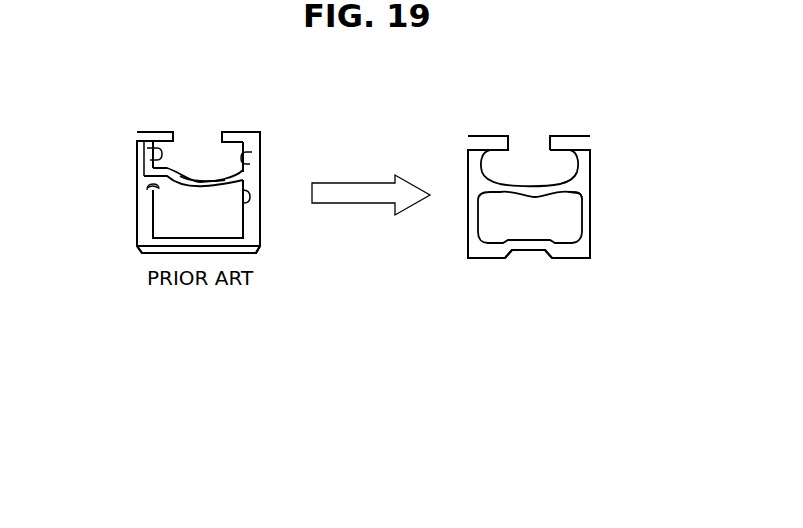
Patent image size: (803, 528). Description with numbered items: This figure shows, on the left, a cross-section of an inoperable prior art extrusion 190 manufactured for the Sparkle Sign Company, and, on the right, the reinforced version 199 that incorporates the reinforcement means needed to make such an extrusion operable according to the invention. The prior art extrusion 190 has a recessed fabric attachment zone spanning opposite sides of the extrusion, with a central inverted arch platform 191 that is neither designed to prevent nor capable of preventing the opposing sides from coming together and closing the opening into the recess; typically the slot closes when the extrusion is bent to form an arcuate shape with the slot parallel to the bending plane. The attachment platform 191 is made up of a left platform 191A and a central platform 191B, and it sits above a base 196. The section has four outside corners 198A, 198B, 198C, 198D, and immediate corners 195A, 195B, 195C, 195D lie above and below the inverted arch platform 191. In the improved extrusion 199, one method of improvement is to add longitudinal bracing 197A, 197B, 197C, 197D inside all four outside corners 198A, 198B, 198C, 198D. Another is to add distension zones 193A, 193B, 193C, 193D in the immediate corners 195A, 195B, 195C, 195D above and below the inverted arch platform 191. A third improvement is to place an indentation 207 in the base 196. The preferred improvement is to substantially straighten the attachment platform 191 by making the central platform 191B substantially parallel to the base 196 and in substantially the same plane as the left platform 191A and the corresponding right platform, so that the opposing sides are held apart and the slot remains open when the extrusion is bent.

The extrusion 190 is at (207, 104).
The inverted arch platform 191 is at (205, 190).
The left platform 191A is at (150, 207).
The central platform 191B is at (200, 176).
The immediate corner 195A is at (152, 152).
The immediate corner 195B is at (147, 190).
The immediate corner 195C is at (248, 163).
The immediate corner 195D is at (248, 198).
The base 196 is at (200, 247).
The outside corner 198A is at (142, 132).
The outside corner 198B is at (140, 255).
The outside corner 198C is at (245, 133).
The outside corner 198D is at (256, 250).
The channel profile 199 is at (539, 111).
The distension zone 193A is at (482, 172).
The distension zone 193B is at (476, 198).
The distension zone 193C is at (578, 180).
The distension zone 193D is at (580, 195).
The longitudinal bracing 197A is at (478, 153).
The longitudinal bracing 197B is at (482, 250).
The longitudinal bracing 197C is at (590, 147).
The longitudinal bracing 197D is at (592, 251).
The indentation 207 is at (532, 250).